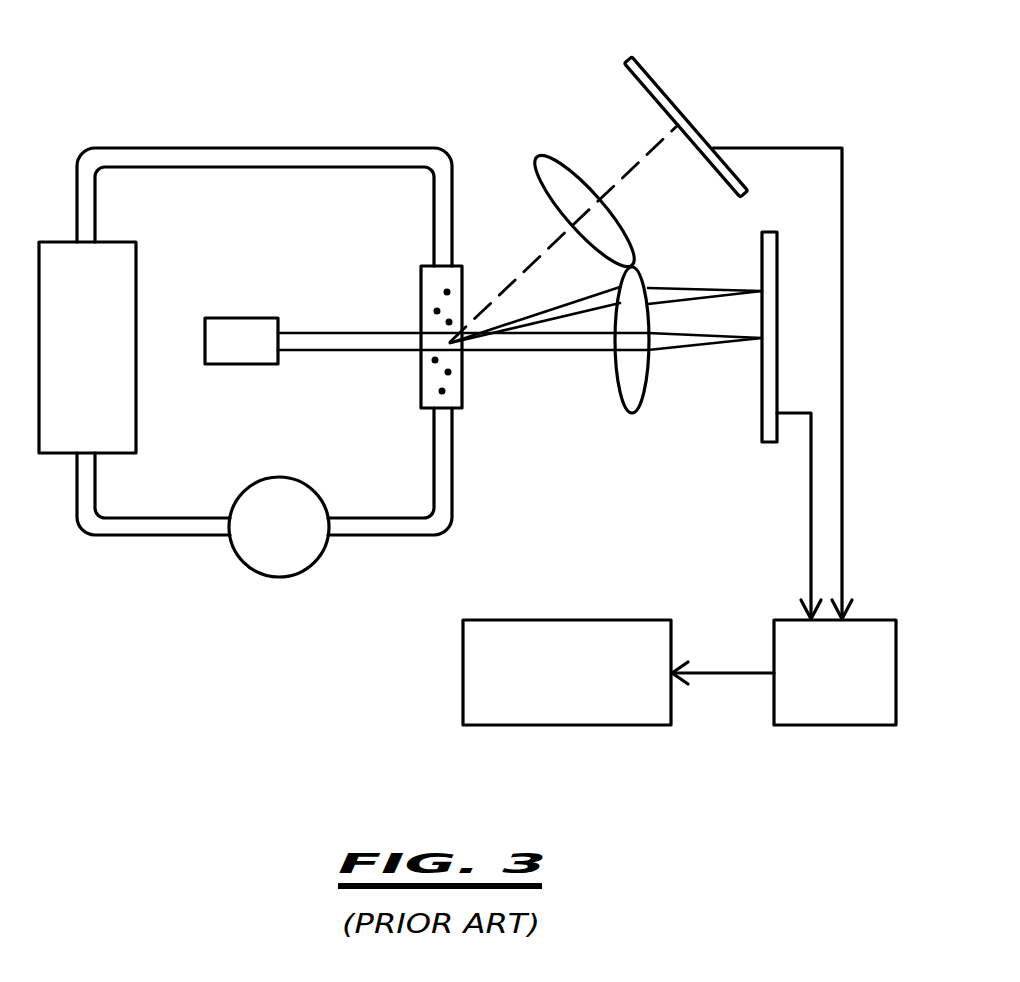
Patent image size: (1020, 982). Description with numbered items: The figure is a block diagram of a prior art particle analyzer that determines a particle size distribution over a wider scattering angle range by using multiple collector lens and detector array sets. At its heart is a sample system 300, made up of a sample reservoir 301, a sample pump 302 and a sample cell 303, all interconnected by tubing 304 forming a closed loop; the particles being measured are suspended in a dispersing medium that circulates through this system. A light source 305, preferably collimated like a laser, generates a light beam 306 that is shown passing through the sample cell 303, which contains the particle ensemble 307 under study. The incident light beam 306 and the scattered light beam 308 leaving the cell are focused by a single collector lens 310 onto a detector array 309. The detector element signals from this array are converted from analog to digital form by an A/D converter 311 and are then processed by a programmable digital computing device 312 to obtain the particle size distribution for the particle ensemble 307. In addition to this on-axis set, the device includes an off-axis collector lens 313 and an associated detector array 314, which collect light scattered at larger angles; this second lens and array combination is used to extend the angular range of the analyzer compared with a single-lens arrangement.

The sample system 300 is at (198, 149).
The sample reservoir 301 is at (136, 255).
The sample pump 302 is at (296, 576).
The sample cell 303 is at (465, 392).
The tubing 304 is at (345, 148).
The light source 305 is at (233, 365).
The light beam 306 is at (306, 331).
The particle ensemble 307 is at (432, 290).
The scattered light beam 308 is at (530, 307).
The detector array 309 is at (767, 444).
The collector lens 310 is at (645, 400).
The A/D converter 311 is at (812, 725).
The programmable digital computing device 312 is at (535, 725).
The off-axis collector lens 313 is at (545, 158).
The detector array 314 is at (659, 87).